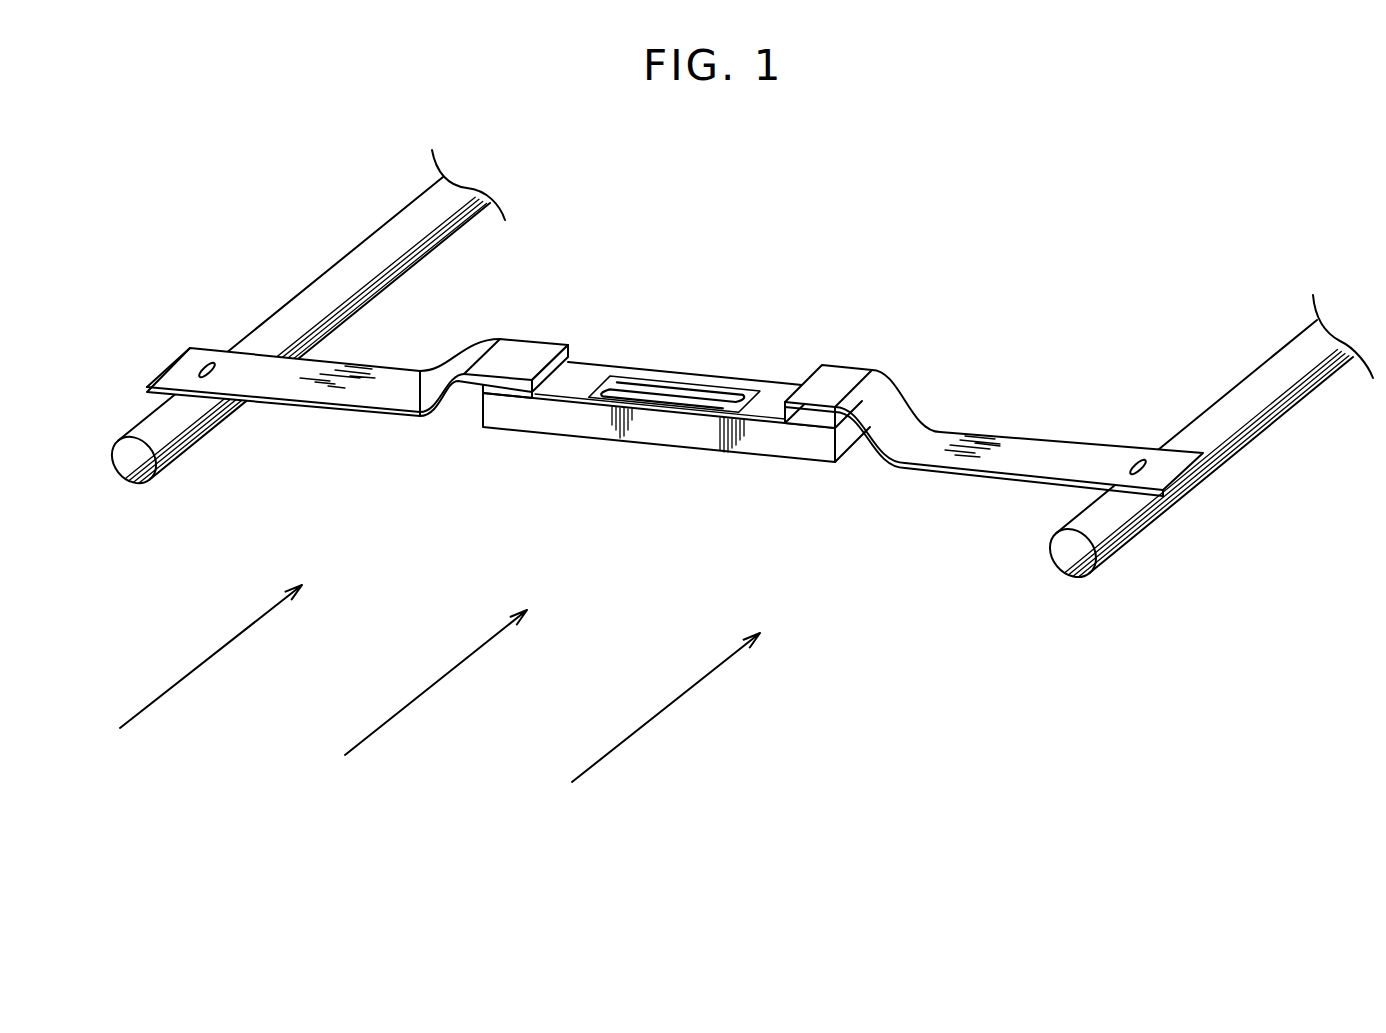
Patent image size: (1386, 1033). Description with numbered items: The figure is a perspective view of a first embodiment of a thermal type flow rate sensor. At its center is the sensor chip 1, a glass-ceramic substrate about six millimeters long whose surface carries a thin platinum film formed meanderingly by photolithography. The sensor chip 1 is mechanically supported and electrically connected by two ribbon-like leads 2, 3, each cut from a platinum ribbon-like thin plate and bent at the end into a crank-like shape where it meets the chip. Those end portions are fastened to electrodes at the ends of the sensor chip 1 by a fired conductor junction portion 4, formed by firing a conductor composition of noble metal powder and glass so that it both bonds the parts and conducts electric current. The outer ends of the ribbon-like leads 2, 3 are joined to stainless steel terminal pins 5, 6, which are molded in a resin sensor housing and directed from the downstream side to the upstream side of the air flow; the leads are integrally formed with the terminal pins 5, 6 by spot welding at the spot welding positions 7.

The sensor chip 1 is at (714, 352).
The ribbon-like lead 2 is at (430, 378).
The ribbon-like lead 3 is at (957, 437).
The fired conductor junction portion 4 is at (507, 392).
The terminal pin 5 is at (313, 283).
The terminal pin 6 is at (1201, 423).
The spot welding position 7 is at (203, 371).